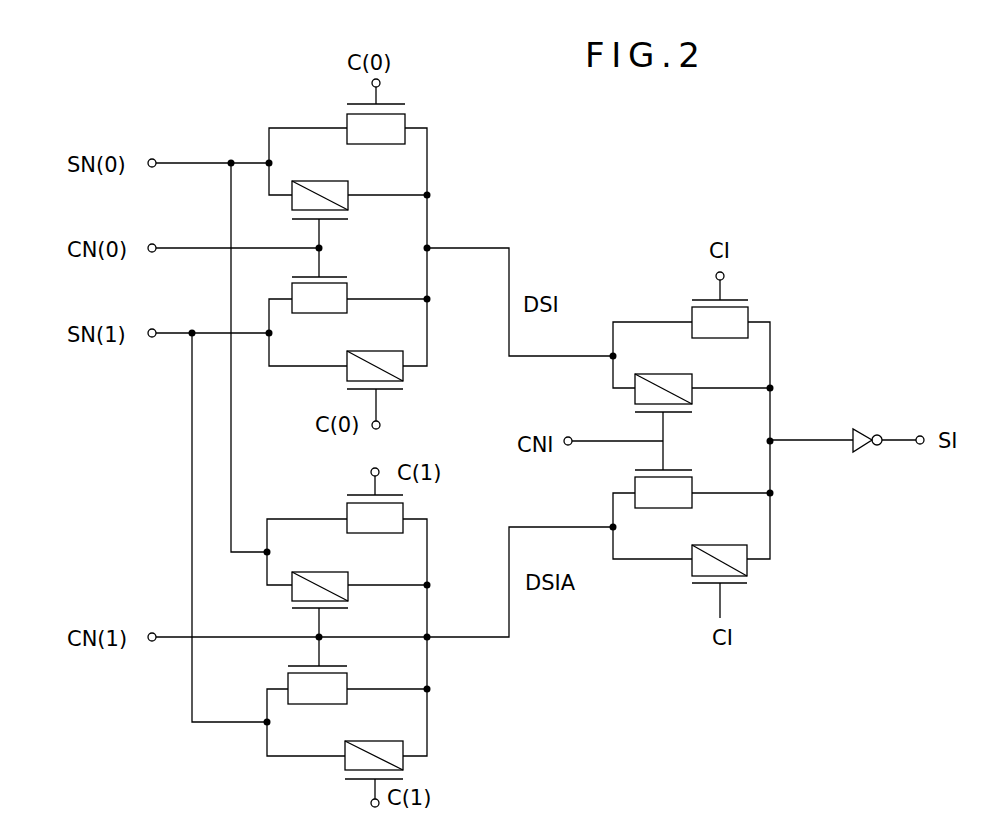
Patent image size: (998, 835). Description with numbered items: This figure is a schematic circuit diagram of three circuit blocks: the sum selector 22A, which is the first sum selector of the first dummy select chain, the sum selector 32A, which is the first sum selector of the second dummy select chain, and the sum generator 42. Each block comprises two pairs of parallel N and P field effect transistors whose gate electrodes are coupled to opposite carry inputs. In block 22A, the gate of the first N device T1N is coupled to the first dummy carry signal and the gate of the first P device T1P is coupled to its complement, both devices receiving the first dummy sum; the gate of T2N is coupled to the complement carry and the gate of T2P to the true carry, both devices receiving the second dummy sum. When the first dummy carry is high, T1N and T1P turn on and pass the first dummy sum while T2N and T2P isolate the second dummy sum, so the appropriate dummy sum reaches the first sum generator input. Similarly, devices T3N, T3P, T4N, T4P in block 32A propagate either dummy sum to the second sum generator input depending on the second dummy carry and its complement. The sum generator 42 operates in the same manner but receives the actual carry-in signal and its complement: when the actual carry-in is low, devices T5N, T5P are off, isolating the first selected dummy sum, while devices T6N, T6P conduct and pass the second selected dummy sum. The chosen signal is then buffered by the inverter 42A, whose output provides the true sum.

The circuit block (first sum selector) 22A is at (232, 122).
The circuit block (first sum selector) 32A is at (242, 740).
The sum generator 42 is at (648, 250).
The inverter 42A is at (866, 436).
The first N device T1N is at (402, 128).
The first P device T1P is at (340, 192).
The N device T2N is at (332, 296).
The P device T2P is at (392, 366).
The N device T3N is at (357, 512).
The P device T3P is at (330, 578).
The N device T4N is at (330, 690).
The P device T4P is at (362, 758).
The N device T5N is at (740, 318).
The P device T5P is at (690, 395).
The N device T6N is at (640, 481).
The P device T6P is at (742, 562).